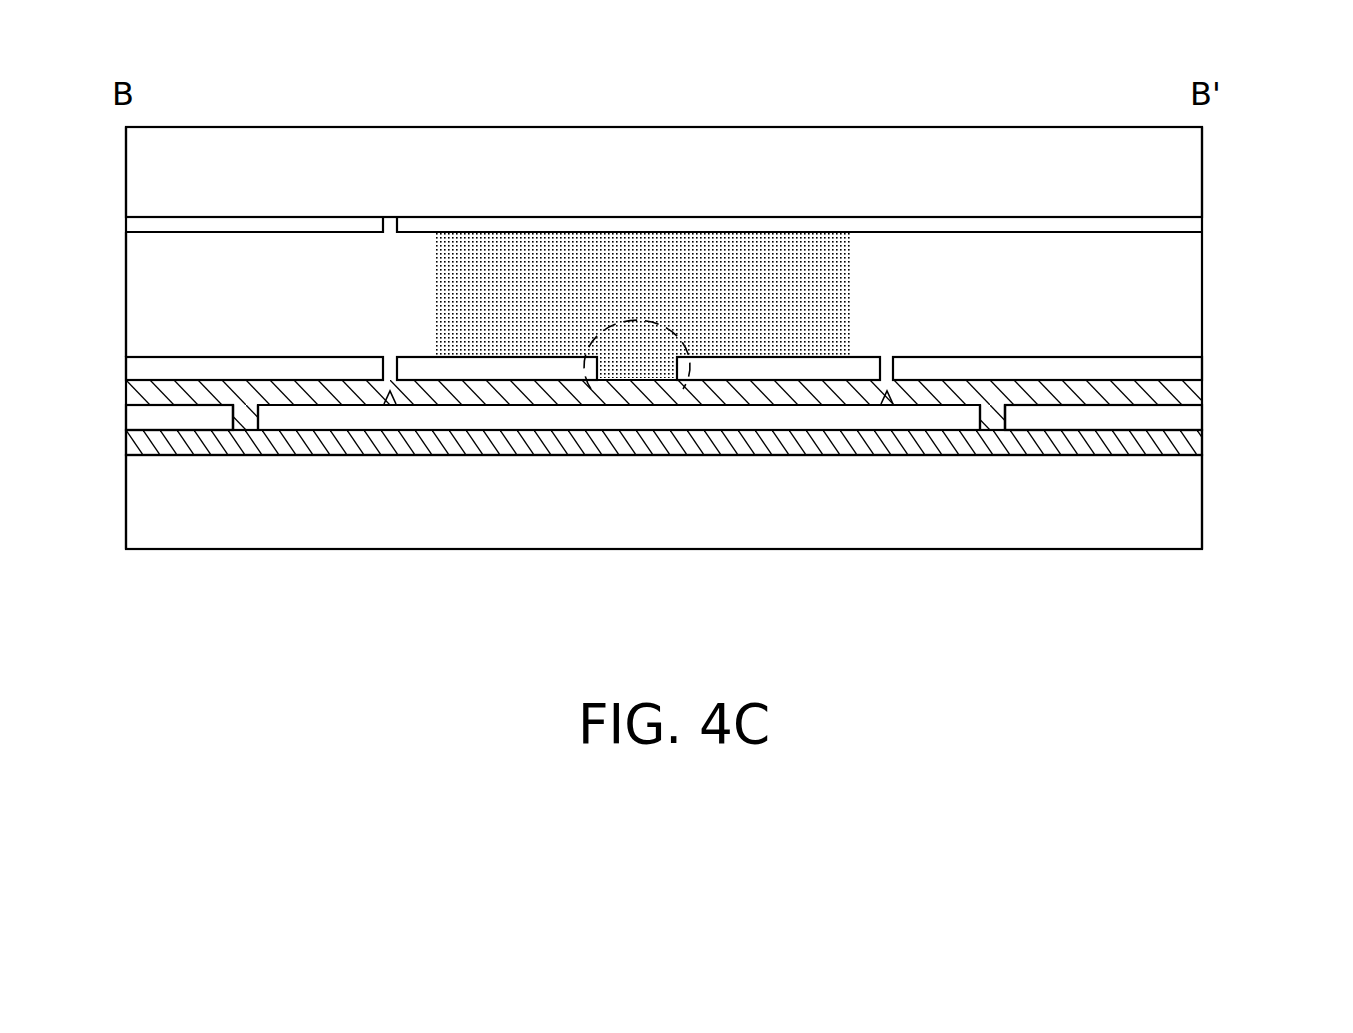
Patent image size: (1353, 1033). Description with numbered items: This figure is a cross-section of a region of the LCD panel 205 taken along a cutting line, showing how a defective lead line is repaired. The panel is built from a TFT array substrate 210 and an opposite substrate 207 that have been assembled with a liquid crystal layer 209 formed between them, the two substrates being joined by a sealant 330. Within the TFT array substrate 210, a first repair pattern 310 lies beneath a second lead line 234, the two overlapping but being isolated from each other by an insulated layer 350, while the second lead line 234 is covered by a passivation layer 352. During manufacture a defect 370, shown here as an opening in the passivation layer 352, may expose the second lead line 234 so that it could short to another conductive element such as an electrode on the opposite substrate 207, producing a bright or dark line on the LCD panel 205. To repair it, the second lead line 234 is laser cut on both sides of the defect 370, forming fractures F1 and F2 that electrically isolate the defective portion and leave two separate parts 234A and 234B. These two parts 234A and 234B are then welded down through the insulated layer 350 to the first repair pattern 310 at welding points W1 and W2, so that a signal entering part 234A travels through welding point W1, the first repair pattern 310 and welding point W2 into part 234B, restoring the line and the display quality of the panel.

The LCD panel 205 is at (1347, 656).
The opposite substrate 207 is at (115, 127).
The liquid crystal layer 209 is at (156, 296).
The TFT array substrate 210 is at (115, 357).
The sealant 330 is at (620, 268).
The passivation layer 352 is at (1187, 363).
The insulated layer 350 is at (1190, 414).
The second lead line 234 is at (1208, 405).
The first part of second lead line 234A is at (168, 397).
The second part of second lead line 234B is at (1120, 397).
The first repair pattern 310 is at (1195, 440).
The defect 370 is at (658, 397).
The welding point W1 is at (248, 422).
The welding point W2 is at (993, 420).
The fracture F1 is at (390, 408).
The fracture F2 is at (887, 405).